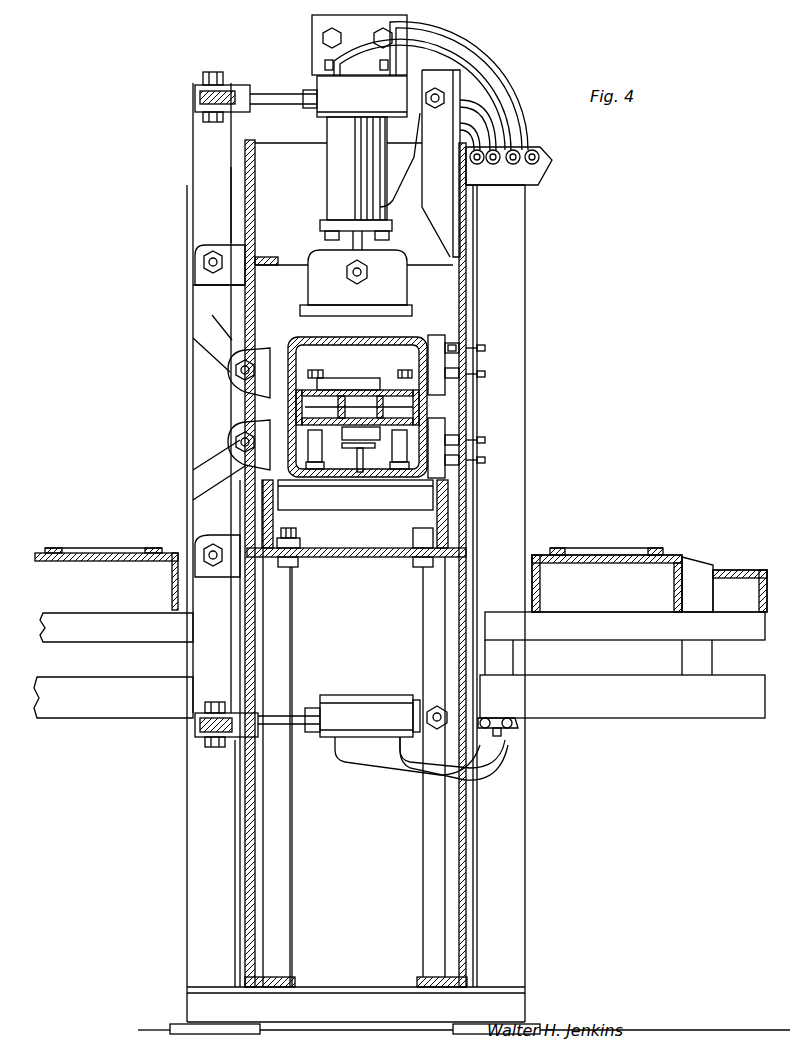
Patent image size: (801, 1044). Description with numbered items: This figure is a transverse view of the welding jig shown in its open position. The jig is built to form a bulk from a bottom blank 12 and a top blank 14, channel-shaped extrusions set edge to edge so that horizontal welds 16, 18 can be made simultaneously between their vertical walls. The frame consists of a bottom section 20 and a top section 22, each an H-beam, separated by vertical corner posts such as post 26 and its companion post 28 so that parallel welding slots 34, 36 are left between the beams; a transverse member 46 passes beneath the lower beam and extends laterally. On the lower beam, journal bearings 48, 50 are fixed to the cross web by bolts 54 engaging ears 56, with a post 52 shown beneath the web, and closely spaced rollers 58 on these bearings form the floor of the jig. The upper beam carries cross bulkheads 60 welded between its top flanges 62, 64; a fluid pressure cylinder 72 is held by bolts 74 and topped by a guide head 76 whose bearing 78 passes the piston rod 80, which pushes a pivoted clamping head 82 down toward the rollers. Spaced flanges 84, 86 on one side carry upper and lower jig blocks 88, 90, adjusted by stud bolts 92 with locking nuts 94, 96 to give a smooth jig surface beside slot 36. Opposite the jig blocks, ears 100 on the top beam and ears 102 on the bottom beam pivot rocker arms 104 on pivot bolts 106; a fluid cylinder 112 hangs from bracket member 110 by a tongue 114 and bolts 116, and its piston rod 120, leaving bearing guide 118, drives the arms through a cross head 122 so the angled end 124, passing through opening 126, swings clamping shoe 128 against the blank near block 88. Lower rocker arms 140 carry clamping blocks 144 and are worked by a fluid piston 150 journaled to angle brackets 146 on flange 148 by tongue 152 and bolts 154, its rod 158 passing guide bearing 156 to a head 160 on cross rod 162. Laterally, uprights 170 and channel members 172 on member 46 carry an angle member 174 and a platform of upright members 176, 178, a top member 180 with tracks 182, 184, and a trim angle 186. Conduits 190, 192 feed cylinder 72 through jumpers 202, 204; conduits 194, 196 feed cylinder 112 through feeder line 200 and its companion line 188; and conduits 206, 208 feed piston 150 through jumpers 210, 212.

The bottom blank 12 is at (400, 470).
The top blank 14 is at (402, 340).
The horizontal weld 16 is at (288, 404).
The horizontal weld 18 is at (420, 406).
The bottom section 20 is at (348, 557).
The top section 22 is at (263, 255).
The vertical corner post 26 is at (187, 352).
The right frame column 28 is at (525, 910).
The welding slot 34 is at (236, 442).
The welding slot 36 is at (450, 412).
The transverse member 46 is at (693, 710).
The journal bearing 48 is at (282, 567).
The journal bearing 50 is at (418, 557).
The post 52 is at (320, 557).
The bolt 54 is at (296, 531).
The ear 56 is at (300, 543).
The roller 58 is at (362, 510).
The cross bulkhead 60 is at (298, 150).
The top flange 62 is at (245, 160).
The top flange 64 is at (495, 240).
The fluid pressure cylinder 72 is at (350, 160).
The bolt 74 is at (333, 192).
The guide head 76 is at (323, 222).
The bearing 78 is at (370, 232).
The piston rod 80 is at (350, 242).
The clamping head 82 is at (308, 280).
The flange 84 is at (465, 318).
The flange 86 is at (448, 540).
The upper jig block 88 is at (436, 338).
The lower jig block 90 is at (440, 470).
The stud bolt 92 is at (485, 348).
The locking nut 94 is at (456, 347).
The locking nut 96 is at (485, 374).
The outstanding ear 100 is at (200, 283).
The ear 102 is at (205, 550).
The rocker arm 104 is at (193, 160).
The pivot bolt 106 is at (208, 262).
The angle shaped bracket member 110 is at (455, 160).
The fluid cylinder 112 is at (335, 92).
The tongue 114 is at (400, 190).
The bolt 116 is at (436, 88).
The bearing guide 118 is at (317, 87).
The piston rod 120 is at (265, 95).
The cross head 122 is at (195, 97).
The angled end 124 is at (220, 355).
The opening 126 is at (250, 348).
The clamping shoe 128 is at (240, 392).
The rocker arm 140 is at (210, 680).
The clamping block 144 is at (220, 452).
The angle bracket 146 is at (423, 628).
The flange 148 is at (205, 478).
The fluid piston 150 is at (355, 695).
The tongue 152 is at (418, 700).
The bolt 154 is at (447, 714).
The guide bearing 156 is at (310, 708).
The piston rod 158 is at (292, 730).
The head 160 is at (252, 713).
The cross rod 162 is at (197, 730).
The upright extending member 170 is at (508, 664).
The channel shaped member 172 is at (695, 650).
The angle member 174 is at (623, 630).
The upright member 176 is at (541, 570).
The upright member 178 is at (674, 565).
The top member 180 is at (678, 556).
The track 182 is at (562, 548).
The track 184 is at (655, 548).
The angle member 186 is at (742, 570).
The hose 188 is at (483, 58).
The conduit 190 is at (480, 165).
The conduit 192 is at (500, 185).
The conduit 194 is at (530, 185).
The conduit 196 is at (548, 165).
The feeder line 200 is at (522, 80).
The jumper 202 is at (465, 125).
The jumper 204 is at (492, 130).
The conduit 206 is at (505, 738).
The conduit 208 is at (518, 724).
The jumper 210 is at (420, 770).
The jumper 212 is at (420, 785).